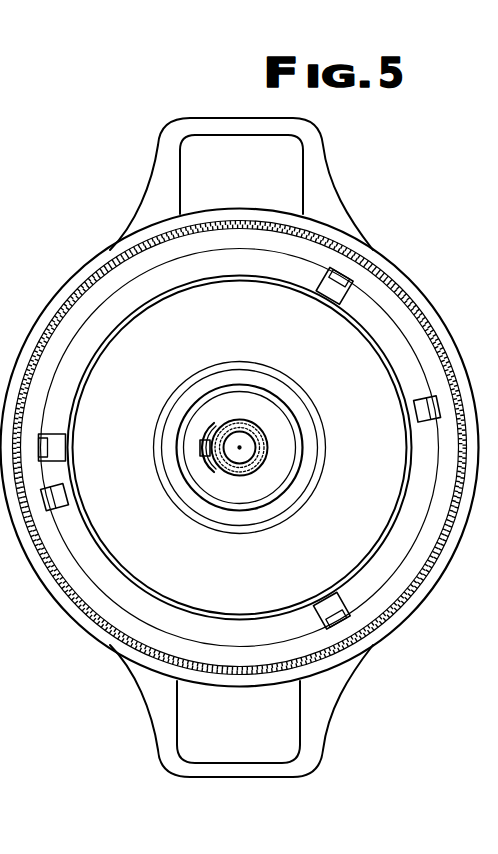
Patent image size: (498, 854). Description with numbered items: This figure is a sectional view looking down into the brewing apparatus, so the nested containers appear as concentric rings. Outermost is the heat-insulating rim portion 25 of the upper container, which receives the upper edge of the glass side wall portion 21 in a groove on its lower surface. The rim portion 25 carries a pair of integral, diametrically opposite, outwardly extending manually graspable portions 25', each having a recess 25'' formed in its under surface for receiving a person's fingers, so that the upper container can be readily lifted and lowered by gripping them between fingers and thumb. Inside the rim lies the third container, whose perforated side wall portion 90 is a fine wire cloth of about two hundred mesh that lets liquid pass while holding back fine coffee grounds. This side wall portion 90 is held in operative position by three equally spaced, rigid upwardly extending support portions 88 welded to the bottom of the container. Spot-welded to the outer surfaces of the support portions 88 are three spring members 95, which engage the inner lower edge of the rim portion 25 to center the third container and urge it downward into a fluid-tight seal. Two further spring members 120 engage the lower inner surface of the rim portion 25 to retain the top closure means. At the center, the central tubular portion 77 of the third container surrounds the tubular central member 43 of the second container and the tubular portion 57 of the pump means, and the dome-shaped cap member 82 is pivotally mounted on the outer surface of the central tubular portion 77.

The side wall portion 21 is at (88, 617).
The rim portion 25 is at (240, 448).
The manually graspable portions 25' is at (255, 447).
The recesses 25'' is at (277, 439).
The tubular central member 43 is at (263, 434).
The tubular portion 57 is at (260, 467).
The central tubular portion 77 is at (248, 421).
The dome-shaped cap member 82 is at (213, 425).
The support portions 88 is at (320, 295).
The side wall portion 90 is at (103, 527).
The spring members 95 is at (350, 297).
The spring members 120 is at (58, 498).